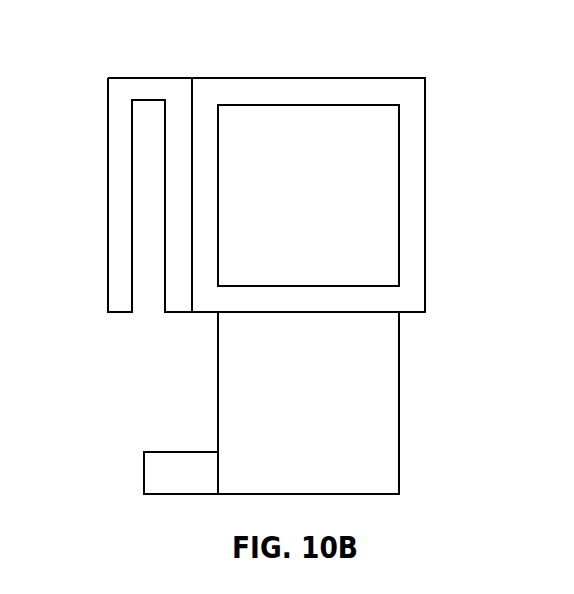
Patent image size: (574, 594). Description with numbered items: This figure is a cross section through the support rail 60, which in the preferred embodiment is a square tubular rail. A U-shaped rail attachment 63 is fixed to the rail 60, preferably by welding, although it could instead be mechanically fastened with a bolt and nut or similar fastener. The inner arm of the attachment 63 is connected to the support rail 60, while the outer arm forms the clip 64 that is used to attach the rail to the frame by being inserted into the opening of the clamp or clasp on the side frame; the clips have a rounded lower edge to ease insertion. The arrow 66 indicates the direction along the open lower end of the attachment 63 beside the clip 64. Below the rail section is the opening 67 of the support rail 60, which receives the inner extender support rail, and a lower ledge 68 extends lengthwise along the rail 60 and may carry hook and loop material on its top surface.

The support rail 60 is at (425, 184).
The rail attachment 63 is at (150, 100).
The clip 64 is at (120, 201).
The insertion direction 66 is at (152, 287).
The opening 67 is at (385, 443).
The lower ledge 68 is at (155, 473).